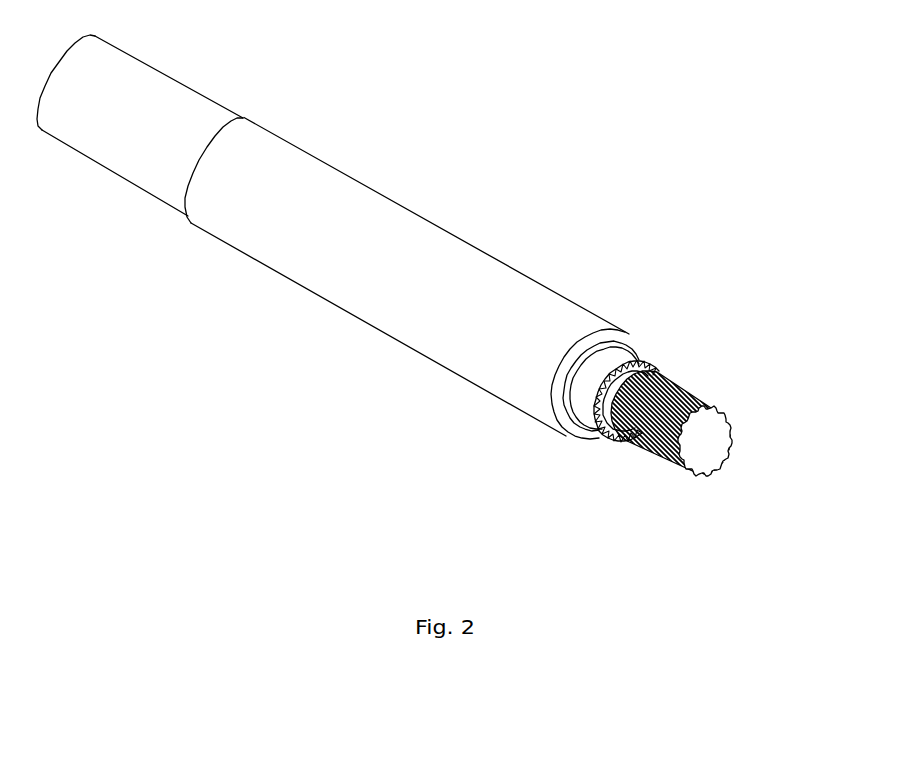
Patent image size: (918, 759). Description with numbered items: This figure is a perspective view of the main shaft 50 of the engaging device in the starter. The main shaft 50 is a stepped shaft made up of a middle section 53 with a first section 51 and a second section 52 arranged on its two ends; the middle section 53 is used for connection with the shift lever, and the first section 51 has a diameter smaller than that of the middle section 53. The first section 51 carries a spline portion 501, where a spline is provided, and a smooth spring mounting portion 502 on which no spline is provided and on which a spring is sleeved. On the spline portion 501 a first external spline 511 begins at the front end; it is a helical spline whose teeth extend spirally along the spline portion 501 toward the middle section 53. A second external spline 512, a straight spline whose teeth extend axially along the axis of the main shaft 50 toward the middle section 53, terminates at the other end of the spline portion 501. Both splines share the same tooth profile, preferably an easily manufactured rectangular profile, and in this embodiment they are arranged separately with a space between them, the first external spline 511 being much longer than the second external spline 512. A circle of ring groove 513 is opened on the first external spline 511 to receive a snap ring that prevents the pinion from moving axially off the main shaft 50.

The main shaft 50 is at (541, 95).
The first section 51 is at (681, 431).
The second section 52 is at (180, 95).
The middle section 53 is at (409, 225).
The spline portion 501 is at (628, 455).
The spring mounting portion 502 is at (580, 412).
The first external spline 511 is at (657, 472).
The second external spline 512 is at (612, 440).
The ring groove 513 is at (708, 400).